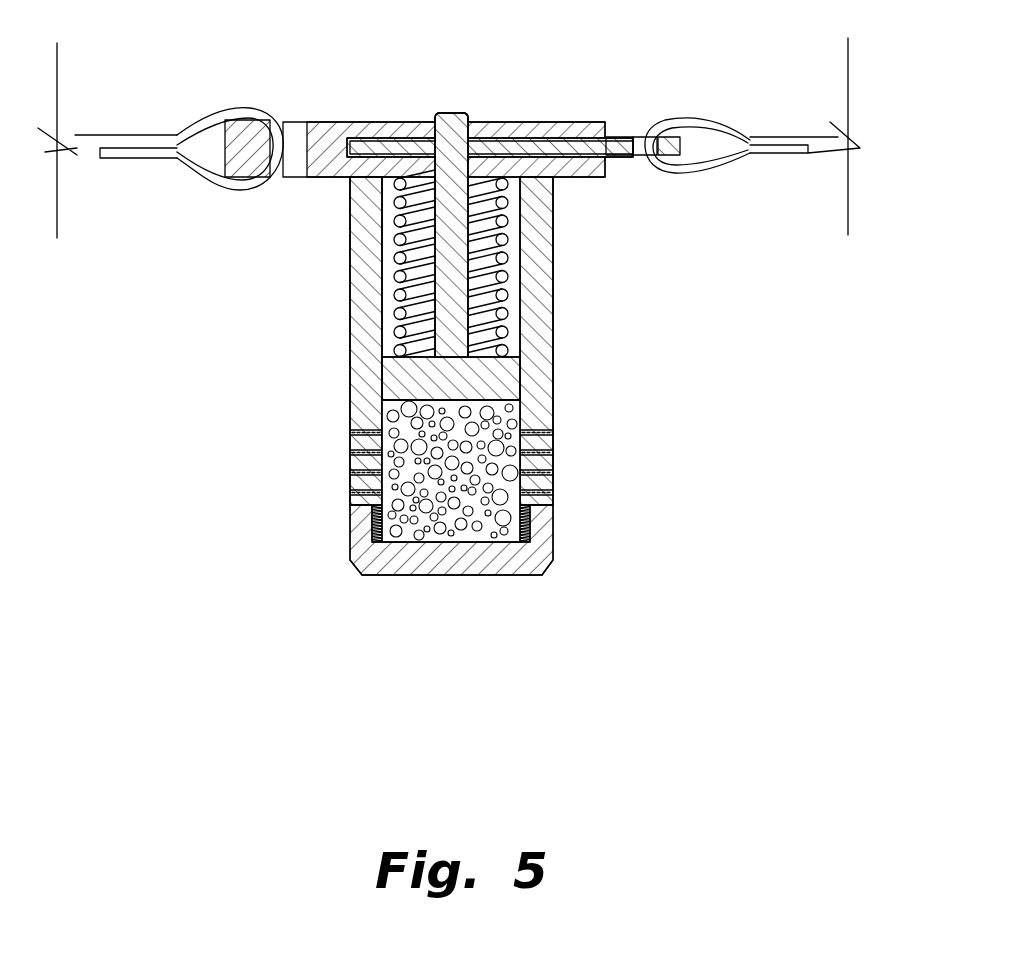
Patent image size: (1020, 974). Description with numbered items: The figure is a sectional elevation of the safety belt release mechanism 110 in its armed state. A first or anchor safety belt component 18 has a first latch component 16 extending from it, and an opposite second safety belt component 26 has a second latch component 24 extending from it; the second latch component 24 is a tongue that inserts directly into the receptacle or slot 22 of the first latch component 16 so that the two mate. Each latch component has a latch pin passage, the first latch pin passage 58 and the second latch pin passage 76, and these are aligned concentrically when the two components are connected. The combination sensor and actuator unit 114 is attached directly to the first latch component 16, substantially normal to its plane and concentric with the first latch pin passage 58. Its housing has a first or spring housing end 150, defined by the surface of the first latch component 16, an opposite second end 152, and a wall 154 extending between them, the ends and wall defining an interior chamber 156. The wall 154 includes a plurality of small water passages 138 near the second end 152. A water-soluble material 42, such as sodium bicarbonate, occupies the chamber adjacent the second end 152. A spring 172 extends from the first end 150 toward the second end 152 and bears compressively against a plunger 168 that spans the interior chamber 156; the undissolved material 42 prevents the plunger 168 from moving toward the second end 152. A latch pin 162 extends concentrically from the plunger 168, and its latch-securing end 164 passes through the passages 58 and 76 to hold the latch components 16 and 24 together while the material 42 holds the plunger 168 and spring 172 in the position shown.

The safety belt release mechanism 110 is at (205, 665).
The combination sensor and actuator unit 114 is at (595, 390).
The first latch component 16 is at (330, 122).
The first or anchor safety belt component 18 is at (145, 135).
The receptacle or slot 22 is at (625, 137).
The second latch component 24 is at (560, 138).
The second safety belt component 26 is at (738, 122).
The water-soluble material 42 is at (423, 535).
The first latch pin passage 58 is at (470, 115).
The second latch pin passage 76 is at (440, 118).
The water passage 138 is at (352, 490).
The first or spring housing end 150 is at (350, 192).
The second end 152 is at (490, 575).
The wall 154 is at (350, 350).
The interior chamber 156 is at (515, 288).
The latch pin 162 is at (440, 233).
The latch-securing end 164 is at (452, 113).
The plunger 168 is at (400, 385).
The spring 172 is at (502, 238).